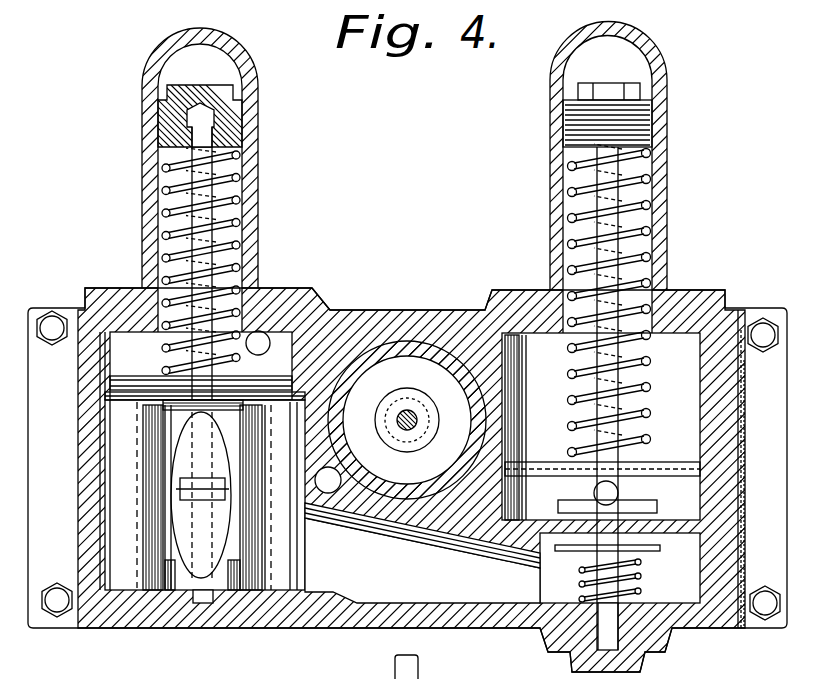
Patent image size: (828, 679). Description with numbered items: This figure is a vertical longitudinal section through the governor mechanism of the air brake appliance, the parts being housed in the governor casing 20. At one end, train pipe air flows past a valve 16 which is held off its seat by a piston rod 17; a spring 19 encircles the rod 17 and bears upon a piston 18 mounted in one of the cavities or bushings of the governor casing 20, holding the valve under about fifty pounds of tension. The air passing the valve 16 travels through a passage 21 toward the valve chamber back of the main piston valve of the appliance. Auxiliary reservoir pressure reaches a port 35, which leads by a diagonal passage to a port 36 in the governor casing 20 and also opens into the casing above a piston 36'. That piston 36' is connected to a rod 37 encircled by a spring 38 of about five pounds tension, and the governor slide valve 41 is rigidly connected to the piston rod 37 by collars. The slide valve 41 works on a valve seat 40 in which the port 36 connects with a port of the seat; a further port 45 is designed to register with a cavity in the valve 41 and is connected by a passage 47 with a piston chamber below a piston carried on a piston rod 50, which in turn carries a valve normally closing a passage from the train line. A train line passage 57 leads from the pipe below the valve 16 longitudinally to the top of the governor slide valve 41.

The valve 16 is at (641, 558).
The piston rod 17 is at (613, 240).
The piston 18 is at (512, 475).
The spring 19 is at (518, 383).
The governor casing 20 is at (355, 316).
The passage 21 is at (619, 498).
The port 35 is at (260, 340).
The port 36 is at (201, 495).
The piston 36' is at (201, 364).
The rod 37 is at (203, 204).
The spring 38 is at (243, 178).
The valve seat 40 is at (141, 492).
The governor slide valve 41 is at (160, 578).
The port 45 is at (262, 592).
The passage 47 is at (330, 494).
The piston rod 50 is at (407, 415).
The train line passage 57 is at (428, 592).